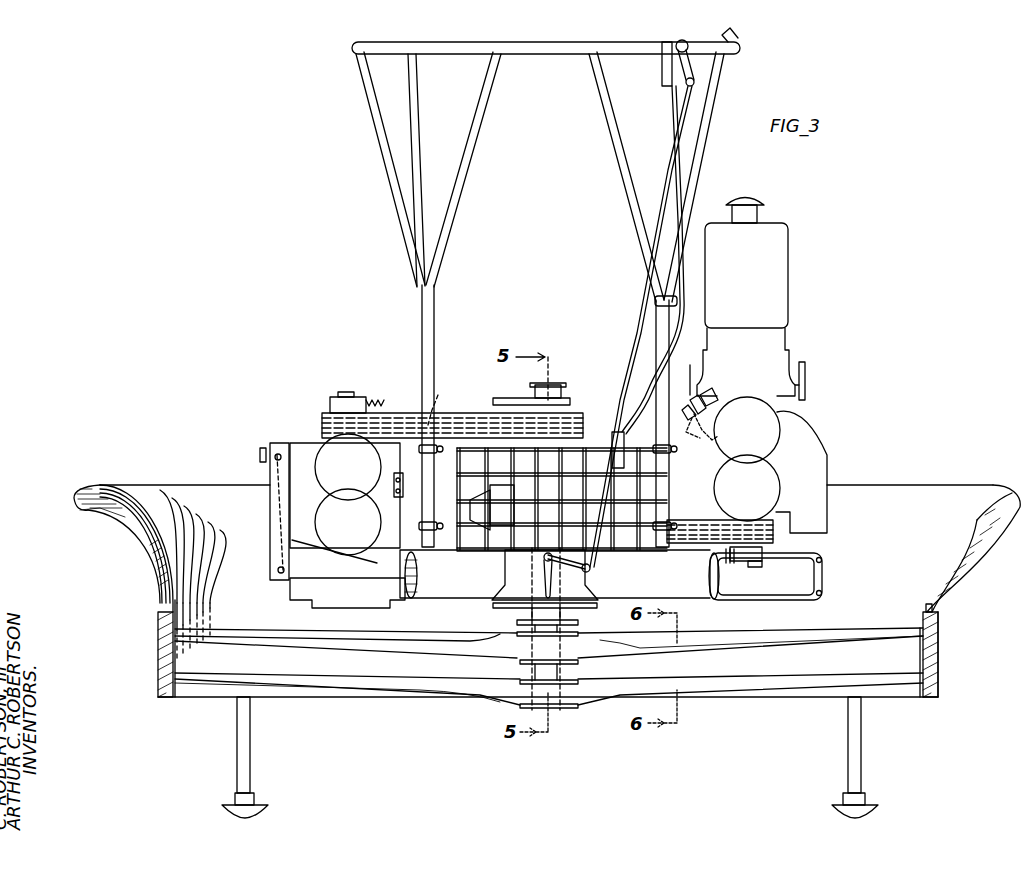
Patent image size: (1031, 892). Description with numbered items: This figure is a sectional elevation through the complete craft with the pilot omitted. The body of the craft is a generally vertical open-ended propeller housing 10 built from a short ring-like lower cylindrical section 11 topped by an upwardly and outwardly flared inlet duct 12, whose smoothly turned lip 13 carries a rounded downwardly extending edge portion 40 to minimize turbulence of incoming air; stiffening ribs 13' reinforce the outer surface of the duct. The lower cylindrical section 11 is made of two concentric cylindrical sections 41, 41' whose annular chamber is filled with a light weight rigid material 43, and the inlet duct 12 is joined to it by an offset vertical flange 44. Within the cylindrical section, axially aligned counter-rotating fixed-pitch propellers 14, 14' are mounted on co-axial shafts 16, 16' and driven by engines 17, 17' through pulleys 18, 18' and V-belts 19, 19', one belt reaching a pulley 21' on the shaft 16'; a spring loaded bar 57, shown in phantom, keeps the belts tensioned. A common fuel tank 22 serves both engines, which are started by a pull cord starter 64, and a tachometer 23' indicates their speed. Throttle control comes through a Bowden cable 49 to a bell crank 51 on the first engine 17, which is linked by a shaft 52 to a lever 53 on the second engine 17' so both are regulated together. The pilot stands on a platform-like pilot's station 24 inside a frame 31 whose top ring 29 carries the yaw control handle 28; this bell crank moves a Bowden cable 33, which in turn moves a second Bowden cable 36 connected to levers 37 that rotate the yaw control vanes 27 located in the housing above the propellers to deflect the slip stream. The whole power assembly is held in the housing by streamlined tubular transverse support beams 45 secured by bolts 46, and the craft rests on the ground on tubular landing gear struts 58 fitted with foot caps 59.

The propeller housing 10 is at (958, 481).
The lower cylindrical section 11 is at (953, 640).
The inlet duct 12 is at (912, 556).
The lip 13 is at (150, 557).
The stiffening ribs 13' is at (127, 556).
The propeller 14 is at (549, 631).
The propeller 14' is at (549, 699).
The shaft 16 is at (536, 629).
The shaft 16' is at (530, 684).
The engine 17 is at (770, 430).
The engine 17' is at (334, 487).
The pulley 18 is at (770, 493).
The pulley 18' is at (433, 416).
The V-belt 19 is at (720, 519).
The V-belt 19' is at (361, 384).
The pulley 21' is at (554, 402).
The fuel tank 22 is at (755, 266).
The tachometer 23' is at (755, 44).
The pilot's station 24 is at (456, 552).
The yaw control vanes 27 is at (520, 574).
The control handle 28 is at (662, 76).
The top ring 29 is at (438, 54).
The frame 31 is at (362, 97).
The Bowden cable 33 is at (642, 374).
The Bowden cable 36 is at (636, 330).
The lever 37 is at (592, 570).
The edge portion 40 is at (76, 510).
The cylindrical section 41 is at (897, 662).
The cylindrical section 41' is at (964, 654).
The rigid material 43 is at (935, 622).
The vertical flange 44 is at (162, 614).
The support beams 45 is at (792, 584).
The bolts 46 is at (824, 566).
The Bowden cable 49 is at (690, 395).
The bell crank 51 is at (712, 430).
The shaft 52 is at (412, 472).
The lever 53 is at (394, 477).
The spring loaded bar 57 is at (440, 395).
The tubular strut 58 is at (848, 734).
The foot cap 59 is at (862, 811).
The pull cord starter 64 is at (260, 454).